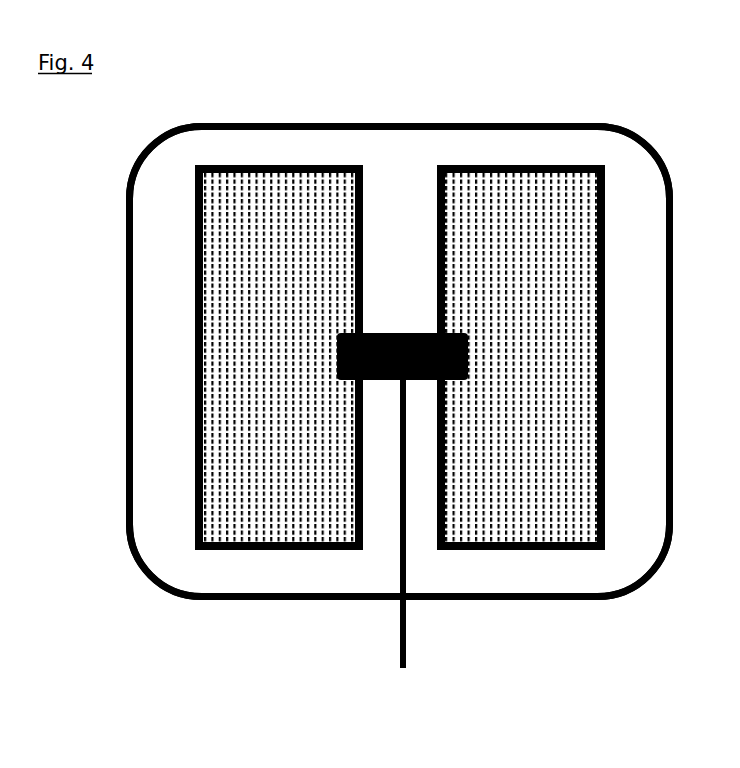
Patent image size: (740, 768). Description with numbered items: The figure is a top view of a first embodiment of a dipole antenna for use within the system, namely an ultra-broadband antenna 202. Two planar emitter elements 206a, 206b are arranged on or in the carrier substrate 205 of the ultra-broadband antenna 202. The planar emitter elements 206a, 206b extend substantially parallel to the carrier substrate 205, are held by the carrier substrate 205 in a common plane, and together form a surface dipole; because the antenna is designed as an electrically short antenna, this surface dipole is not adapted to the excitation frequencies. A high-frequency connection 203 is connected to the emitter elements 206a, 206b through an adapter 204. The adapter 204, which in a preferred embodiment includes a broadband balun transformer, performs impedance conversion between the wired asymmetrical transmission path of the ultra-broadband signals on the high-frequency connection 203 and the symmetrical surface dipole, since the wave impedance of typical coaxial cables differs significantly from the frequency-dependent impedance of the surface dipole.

The ultra-broadband antenna 202 is at (401, 103).
The high-frequency connection 203 is at (406, 641).
The adapter 204 is at (370, 333).
The carrier substrate 205 is at (273, 587).
The planar emitter element 206a is at (264, 165).
The planar emitter element 206b is at (537, 165).